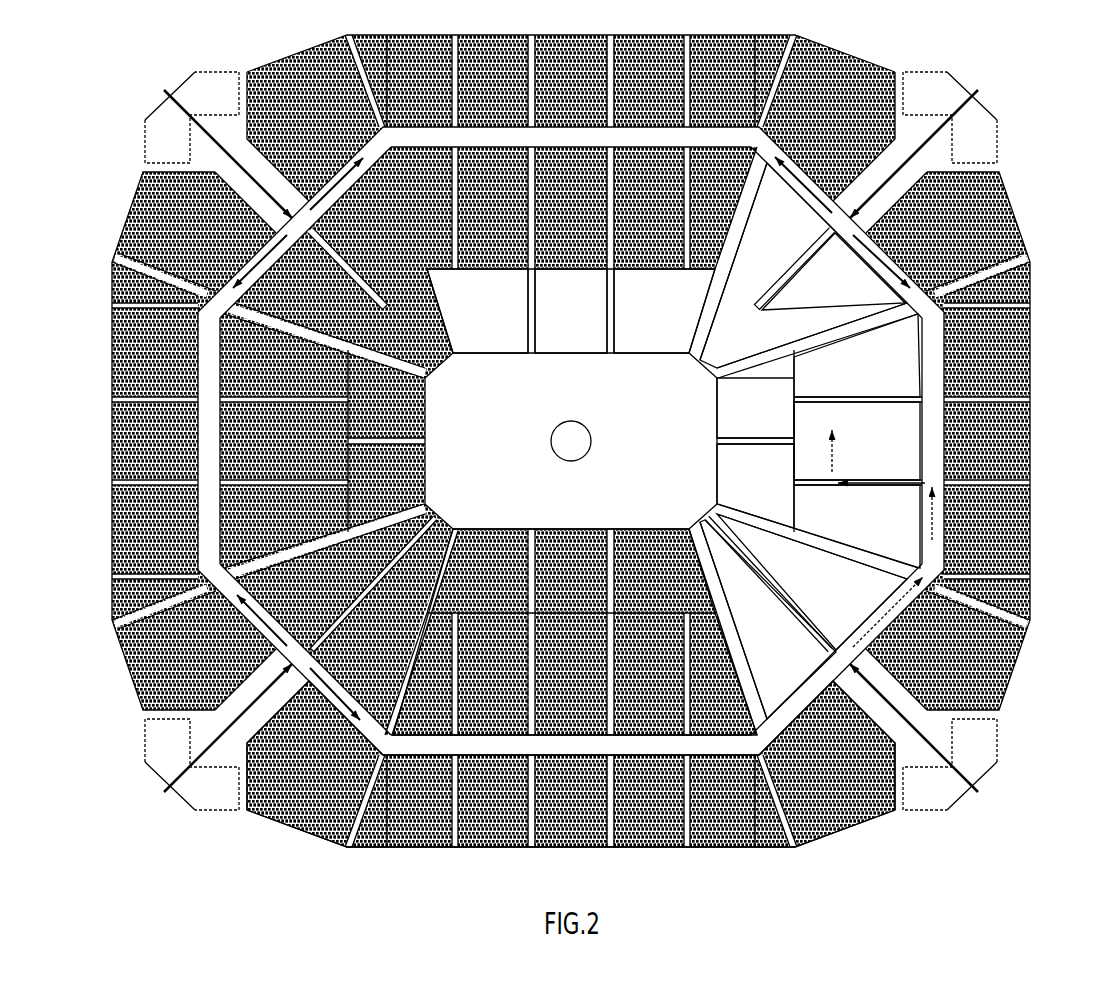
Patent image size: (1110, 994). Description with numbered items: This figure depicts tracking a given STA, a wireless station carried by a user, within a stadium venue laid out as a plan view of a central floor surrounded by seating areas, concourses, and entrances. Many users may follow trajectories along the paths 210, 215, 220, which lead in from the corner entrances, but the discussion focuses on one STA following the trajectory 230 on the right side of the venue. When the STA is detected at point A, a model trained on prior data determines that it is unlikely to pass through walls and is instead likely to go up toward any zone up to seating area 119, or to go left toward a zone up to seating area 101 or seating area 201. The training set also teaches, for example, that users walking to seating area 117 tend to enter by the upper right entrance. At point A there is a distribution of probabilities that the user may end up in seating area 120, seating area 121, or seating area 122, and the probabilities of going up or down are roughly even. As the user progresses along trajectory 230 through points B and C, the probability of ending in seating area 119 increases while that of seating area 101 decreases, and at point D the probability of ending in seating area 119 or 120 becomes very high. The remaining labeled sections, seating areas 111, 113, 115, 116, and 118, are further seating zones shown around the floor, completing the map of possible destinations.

The seating area 101 is at (575, 632).
The seating section 111 is at (477, 311).
The seating section 113 is at (571, 311).
The seating section 115 is at (664, 311).
The seating section 116 is at (803, 265).
The seating area 117 is at (833, 271).
The seating section 118 is at (818, 376).
The seating area 119 is at (857, 441).
The seating area 120 is at (818, 506).
The seating area 121 is at (812, 582).
The seating area 122 is at (768, 619).
The seating area 201 is at (571, 764).
The path 210 is at (1008, 145).
The path 215 is at (172, 72).
The path 220 is at (125, 758).
The trajectory 230 is at (937, 535).